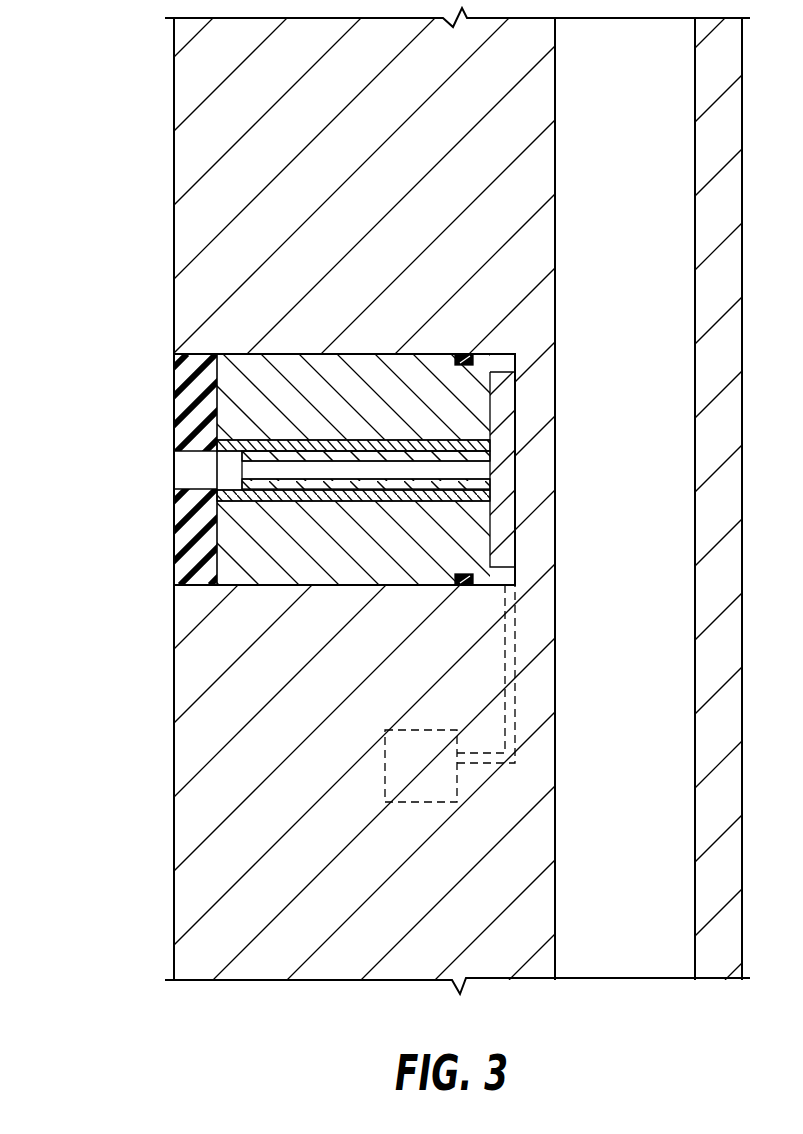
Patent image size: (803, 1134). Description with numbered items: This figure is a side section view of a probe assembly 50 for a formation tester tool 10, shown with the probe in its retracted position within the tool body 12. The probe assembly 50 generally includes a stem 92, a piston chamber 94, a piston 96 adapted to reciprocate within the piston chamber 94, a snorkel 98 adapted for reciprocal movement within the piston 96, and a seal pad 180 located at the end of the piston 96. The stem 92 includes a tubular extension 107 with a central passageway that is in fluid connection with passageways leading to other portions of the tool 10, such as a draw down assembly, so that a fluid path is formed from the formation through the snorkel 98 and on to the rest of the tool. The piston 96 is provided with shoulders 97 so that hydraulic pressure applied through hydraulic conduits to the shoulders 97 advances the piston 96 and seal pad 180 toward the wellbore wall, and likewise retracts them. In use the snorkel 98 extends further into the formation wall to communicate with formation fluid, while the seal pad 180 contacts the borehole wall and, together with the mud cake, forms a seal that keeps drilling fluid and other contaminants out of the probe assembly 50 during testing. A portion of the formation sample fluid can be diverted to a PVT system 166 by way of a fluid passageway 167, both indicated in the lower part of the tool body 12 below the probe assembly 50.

The formation tester tool 10 is at (100, 121).
The housing body 12 is at (174, 657).
The probe assembly 50 is at (152, 371).
The stem 92 is at (507, 428).
The piston chamber 94 is at (332, 585).
The piston 96 is at (253, 544).
The shoulders 97 is at (460, 585).
The snorkel 98 is at (253, 471).
The tubular extension 107 is at (625, 499).
The PVT system 166 is at (384, 768).
The fluid passageway 167 is at (477, 765).
The seal pad 180 is at (174, 405).